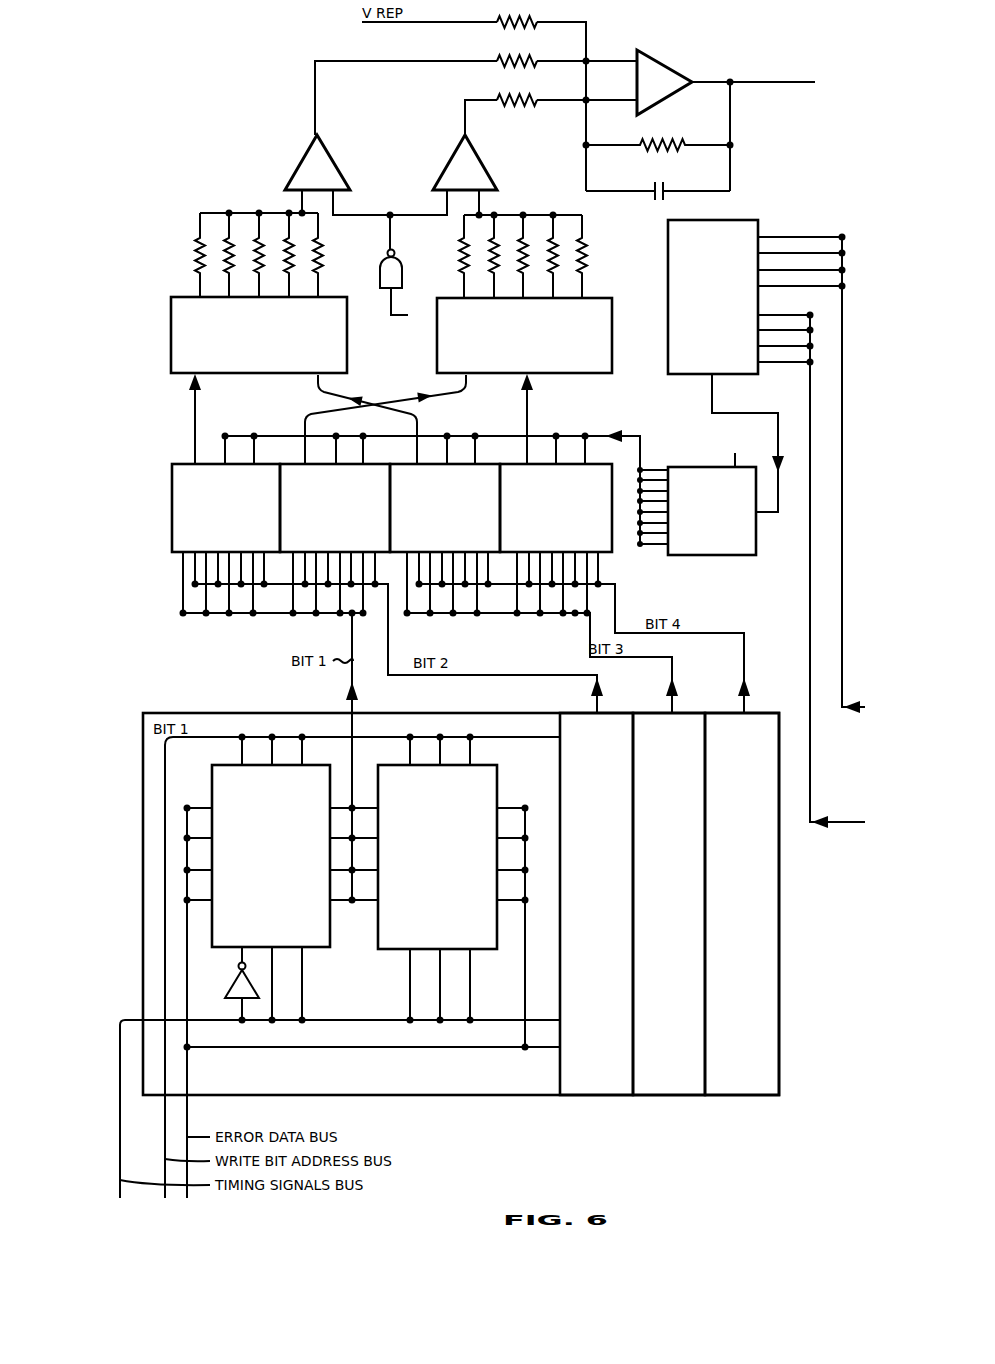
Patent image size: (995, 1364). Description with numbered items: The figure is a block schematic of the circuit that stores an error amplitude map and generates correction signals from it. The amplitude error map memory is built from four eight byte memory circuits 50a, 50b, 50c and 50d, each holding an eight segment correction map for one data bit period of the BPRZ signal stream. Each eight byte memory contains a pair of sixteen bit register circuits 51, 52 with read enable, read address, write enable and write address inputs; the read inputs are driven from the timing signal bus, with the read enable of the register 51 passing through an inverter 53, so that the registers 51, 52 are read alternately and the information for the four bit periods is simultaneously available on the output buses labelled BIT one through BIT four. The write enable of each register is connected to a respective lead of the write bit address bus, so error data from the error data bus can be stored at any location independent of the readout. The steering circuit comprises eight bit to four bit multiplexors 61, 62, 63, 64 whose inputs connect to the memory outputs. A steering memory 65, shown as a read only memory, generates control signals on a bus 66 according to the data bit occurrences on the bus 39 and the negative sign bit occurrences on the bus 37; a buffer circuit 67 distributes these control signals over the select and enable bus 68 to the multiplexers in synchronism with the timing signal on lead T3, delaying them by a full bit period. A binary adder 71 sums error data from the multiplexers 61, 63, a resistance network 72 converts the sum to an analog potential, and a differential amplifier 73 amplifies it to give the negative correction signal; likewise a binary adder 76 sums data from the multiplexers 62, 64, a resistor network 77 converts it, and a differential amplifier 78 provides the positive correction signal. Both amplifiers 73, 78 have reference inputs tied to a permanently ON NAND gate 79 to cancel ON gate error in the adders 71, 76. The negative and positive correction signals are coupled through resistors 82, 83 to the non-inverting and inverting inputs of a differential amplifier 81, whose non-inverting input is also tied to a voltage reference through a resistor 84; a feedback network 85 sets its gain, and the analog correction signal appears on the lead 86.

The bus 37 is at (842, 583).
The bus 39 is at (810, 617).
The eight byte memory circuit 50a is at (332, 993).
The eight byte memory circuit 50b is at (578, 924).
The eight byte memory circuit 50c is at (650, 924).
The eight byte memory circuit 50d is at (723, 924).
The register circuit 51 is at (212, 782).
The register circuit 52 is at (497, 782).
The inverter 53 is at (237, 981).
The eight bit to four bit multiplexor 61 is at (244, 551).
The eight bit to four bit multiplexor 62 is at (356, 551).
The eight bit to four bit multiplexor 63 is at (467, 551).
The eight bit to four bit multiplexor 64 is at (578, 551).
The steering memory 65 is at (690, 378).
The bus 66 is at (751, 443).
The buffer circuit 67 is at (722, 560).
The select/enable bus 68 is at (640, 437).
The binary adder 71 is at (171, 333).
The resistance network 72 is at (236, 205).
The differential amplifier 73 is at (298, 152).
The binary adder 76 is at (592, 300).
The resistor network 77 is at (543, 205).
The differential amplifier 78 is at (444, 162).
The NAND gate 79 is at (401, 262).
The differential amplifier 81 is at (662, 62).
The resistor 82 is at (509, 67).
The resistor 83 is at (516, 105).
The resistor 84 is at (522, 18).
The feedback network 85 is at (688, 171).
The lead 86 is at (775, 82).